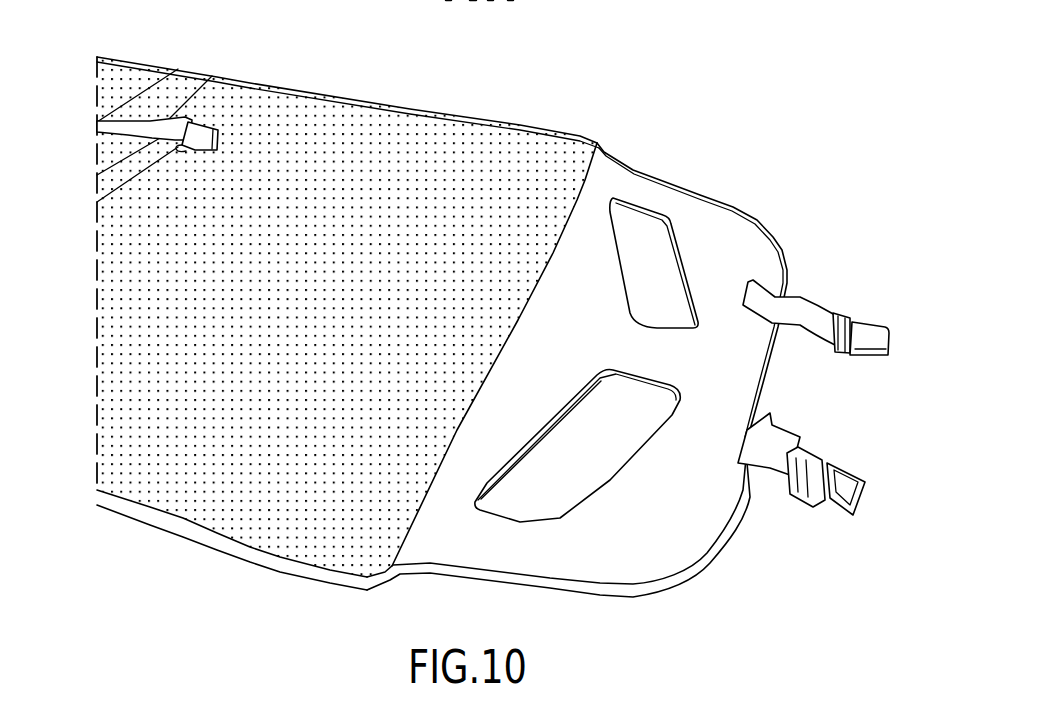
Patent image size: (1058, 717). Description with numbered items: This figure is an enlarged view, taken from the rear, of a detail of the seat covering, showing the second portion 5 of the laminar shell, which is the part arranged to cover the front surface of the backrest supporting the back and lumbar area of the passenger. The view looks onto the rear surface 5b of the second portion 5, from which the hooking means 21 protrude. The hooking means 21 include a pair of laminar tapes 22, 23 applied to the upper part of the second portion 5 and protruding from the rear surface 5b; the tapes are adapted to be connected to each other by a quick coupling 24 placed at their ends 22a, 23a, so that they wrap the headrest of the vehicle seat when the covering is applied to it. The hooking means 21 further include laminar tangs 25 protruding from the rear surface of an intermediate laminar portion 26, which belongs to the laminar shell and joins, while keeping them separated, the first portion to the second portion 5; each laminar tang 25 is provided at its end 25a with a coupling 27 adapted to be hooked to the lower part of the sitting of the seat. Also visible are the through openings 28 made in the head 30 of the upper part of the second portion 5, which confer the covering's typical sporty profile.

The second portion 5 is at (295, 322).
The rear surface 5b is at (126, 378).
The hooking means 21 is at (115, 141).
The laminar tape 22 is at (795, 310).
The end of laminar tape 22a is at (823, 355).
The laminar tape 23 is at (778, 455).
The end of laminar tape 23a is at (794, 503).
The quick coupling 24 is at (870, 367).
The laminar tang 25 is at (127, 122).
The end of laminar tang 25a is at (168, 153).
The intermediate laminar portion 26 is at (170, 99).
The coupling 27 is at (206, 140).
The through opening 28 is at (633, 240).
The head 30 is at (717, 250).